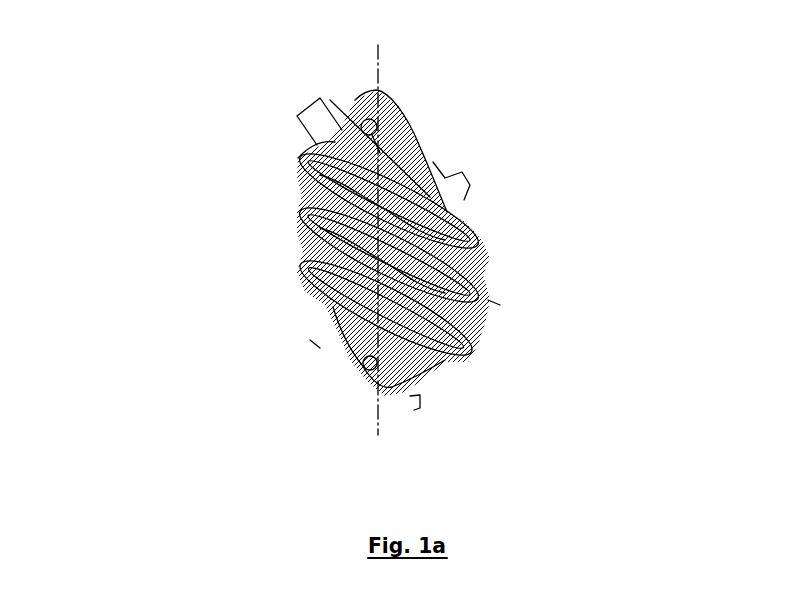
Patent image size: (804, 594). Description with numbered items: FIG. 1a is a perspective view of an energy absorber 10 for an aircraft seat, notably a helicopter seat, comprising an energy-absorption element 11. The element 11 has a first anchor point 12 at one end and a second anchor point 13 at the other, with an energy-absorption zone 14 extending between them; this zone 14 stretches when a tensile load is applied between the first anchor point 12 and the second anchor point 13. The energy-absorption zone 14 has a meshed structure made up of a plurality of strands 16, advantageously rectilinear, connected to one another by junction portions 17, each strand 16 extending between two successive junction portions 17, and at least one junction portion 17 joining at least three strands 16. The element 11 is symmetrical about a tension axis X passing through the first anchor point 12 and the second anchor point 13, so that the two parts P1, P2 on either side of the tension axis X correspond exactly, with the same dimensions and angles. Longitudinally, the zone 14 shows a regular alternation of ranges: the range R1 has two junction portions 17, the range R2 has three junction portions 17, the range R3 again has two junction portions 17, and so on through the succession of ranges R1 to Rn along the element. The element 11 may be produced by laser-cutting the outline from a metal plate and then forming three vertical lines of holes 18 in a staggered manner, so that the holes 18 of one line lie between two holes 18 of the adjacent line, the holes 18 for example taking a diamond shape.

The energy absorber 10 is at (158, 81).
The energy-absorption element 11 is at (348, 90).
The first anchor point 12 is at (426, 121).
The second anchor point 13 is at (357, 365).
The energy-absorption zone 14 is at (401, 296).
The strands 16 is at (465, 178).
The junction portions 17 is at (312, 338).
The holes 18 is at (297, 113).
The first part P1 is at (353, 46).
The second part P2 is at (429, 146).
The tension axis X is at (378, 78).
The first range R1 is at (420, 375).
The second range R2 is at (425, 345).
The third range R3 is at (445, 322).
The nth range Rn is at (468, 215).